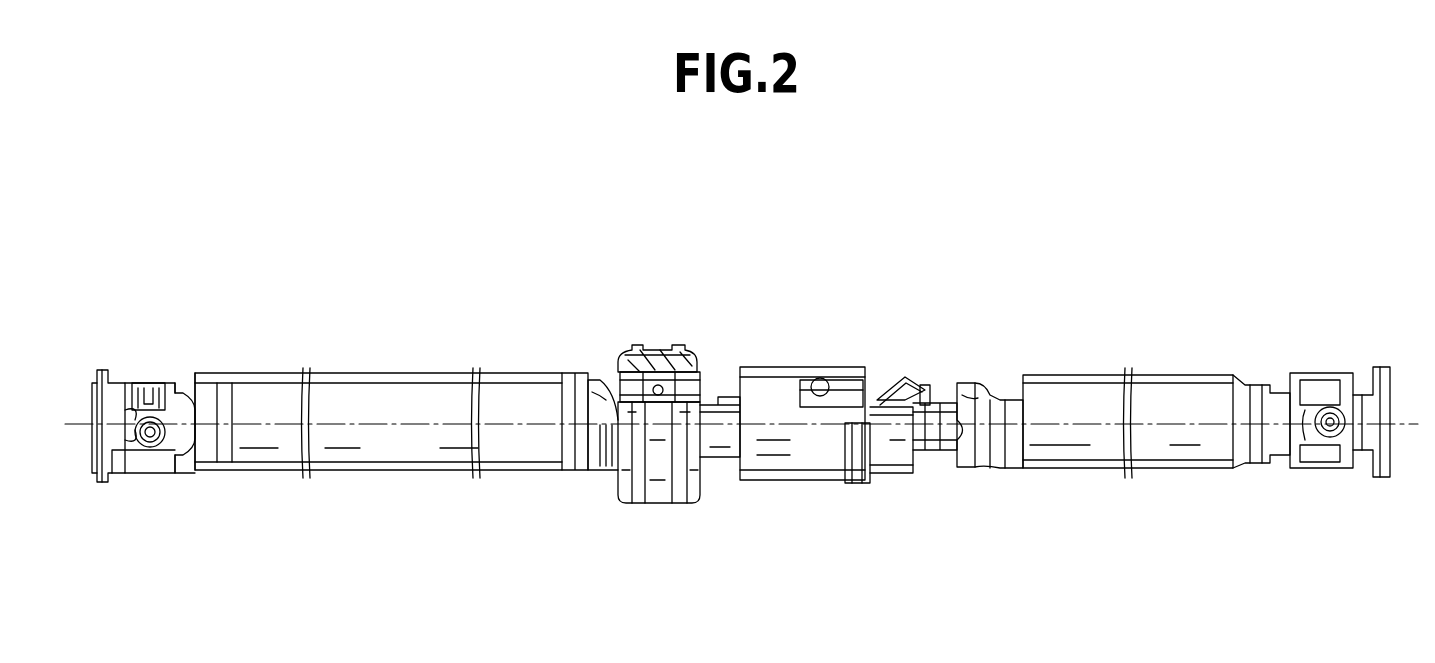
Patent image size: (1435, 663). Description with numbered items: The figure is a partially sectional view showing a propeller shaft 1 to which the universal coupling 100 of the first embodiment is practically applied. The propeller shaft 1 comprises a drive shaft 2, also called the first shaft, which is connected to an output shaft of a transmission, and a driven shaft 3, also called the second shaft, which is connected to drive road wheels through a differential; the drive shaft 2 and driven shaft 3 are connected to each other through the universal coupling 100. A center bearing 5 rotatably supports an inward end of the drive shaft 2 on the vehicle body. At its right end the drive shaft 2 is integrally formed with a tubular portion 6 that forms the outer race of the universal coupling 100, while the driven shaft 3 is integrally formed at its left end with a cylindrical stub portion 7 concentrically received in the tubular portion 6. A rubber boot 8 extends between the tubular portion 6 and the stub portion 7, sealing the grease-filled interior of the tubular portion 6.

The propeller shaft 1 is at (1188, 307).
The drive shaft 2 is at (380, 472).
The driven shaft 3 is at (1105, 472).
The center bearing 5 is at (653, 347).
The tubular portion 6 is at (722, 380).
The cylindrical stub portion 7 is at (975, 385).
The rubber boot 8 is at (905, 378).
The universal coupling 100 is at (830, 322).